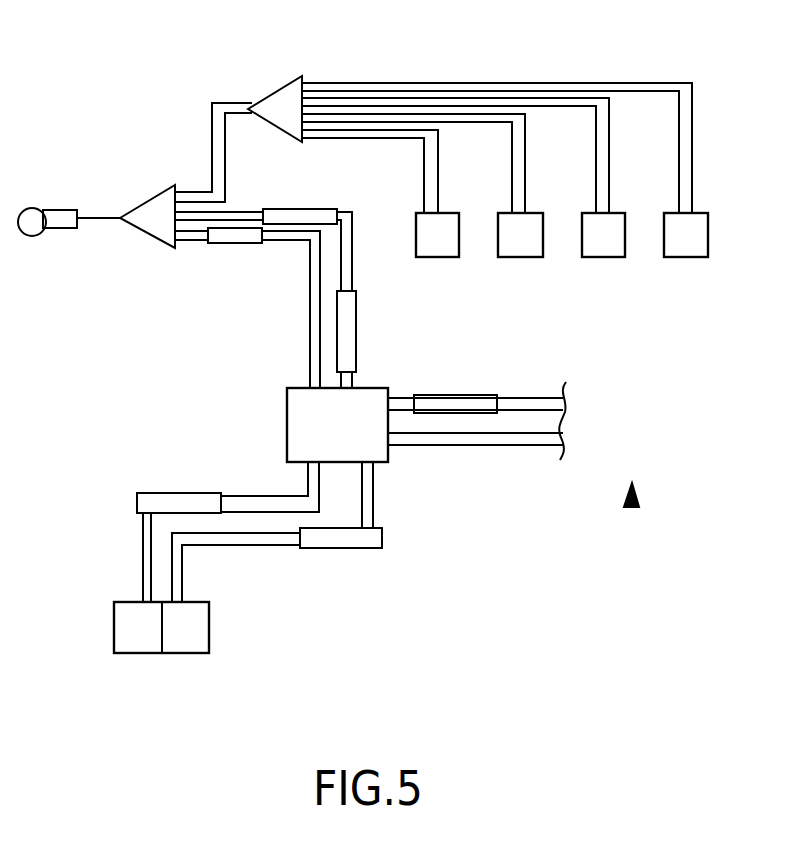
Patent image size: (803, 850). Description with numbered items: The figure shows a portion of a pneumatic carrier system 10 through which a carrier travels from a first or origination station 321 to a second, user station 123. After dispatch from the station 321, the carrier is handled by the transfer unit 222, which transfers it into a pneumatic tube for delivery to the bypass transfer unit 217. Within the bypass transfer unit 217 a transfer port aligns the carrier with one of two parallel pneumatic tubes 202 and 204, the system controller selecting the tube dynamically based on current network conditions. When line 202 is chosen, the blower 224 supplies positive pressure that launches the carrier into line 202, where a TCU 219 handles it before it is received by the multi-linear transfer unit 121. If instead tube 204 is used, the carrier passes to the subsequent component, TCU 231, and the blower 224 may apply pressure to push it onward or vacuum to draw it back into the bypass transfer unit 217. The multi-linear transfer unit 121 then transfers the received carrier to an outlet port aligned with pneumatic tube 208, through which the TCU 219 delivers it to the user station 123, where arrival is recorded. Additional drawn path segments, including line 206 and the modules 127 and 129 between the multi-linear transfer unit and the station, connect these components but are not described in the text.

The system 10 is at (632, 506).
The multi-linear transfer unit 121 is at (388, 462).
The second station 123 is at (209, 622).
The transfer path module 127 is at (137, 500).
The transfer path module 129 is at (372, 549).
The pneumatic tube 202 is at (310, 343).
The pneumatic tube 204 is at (297, 208).
The transport path 206 is at (214, 170).
The pneumatic tube 208 is at (366, 508).
The bypass transfer unit 217 is at (176, 250).
The TCU 219 is at (236, 244).
The transfer unit 222 is at (268, 98).
The blower 224 is at (36, 236).
The TCU 231 is at (356, 332).
The first station 321 is at (708, 238).